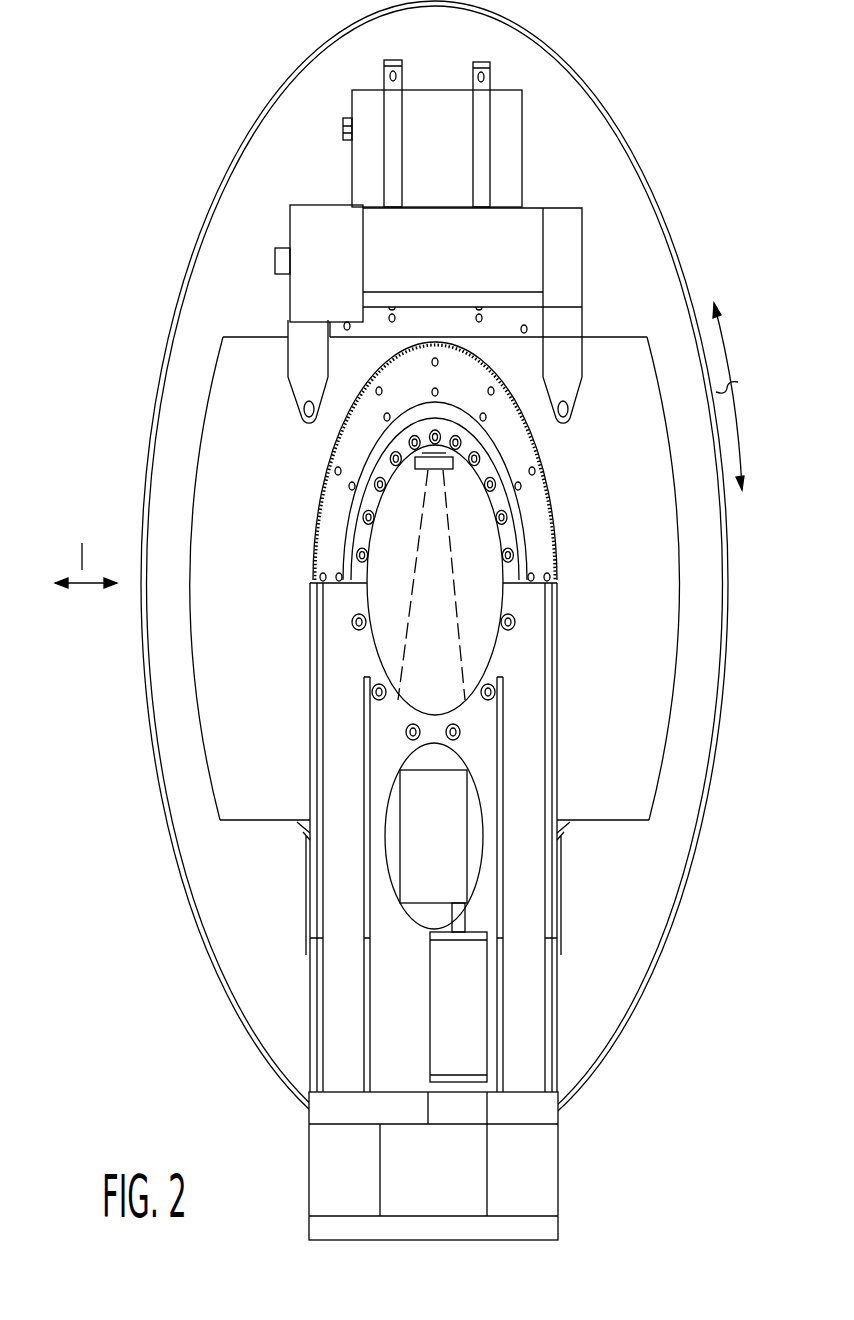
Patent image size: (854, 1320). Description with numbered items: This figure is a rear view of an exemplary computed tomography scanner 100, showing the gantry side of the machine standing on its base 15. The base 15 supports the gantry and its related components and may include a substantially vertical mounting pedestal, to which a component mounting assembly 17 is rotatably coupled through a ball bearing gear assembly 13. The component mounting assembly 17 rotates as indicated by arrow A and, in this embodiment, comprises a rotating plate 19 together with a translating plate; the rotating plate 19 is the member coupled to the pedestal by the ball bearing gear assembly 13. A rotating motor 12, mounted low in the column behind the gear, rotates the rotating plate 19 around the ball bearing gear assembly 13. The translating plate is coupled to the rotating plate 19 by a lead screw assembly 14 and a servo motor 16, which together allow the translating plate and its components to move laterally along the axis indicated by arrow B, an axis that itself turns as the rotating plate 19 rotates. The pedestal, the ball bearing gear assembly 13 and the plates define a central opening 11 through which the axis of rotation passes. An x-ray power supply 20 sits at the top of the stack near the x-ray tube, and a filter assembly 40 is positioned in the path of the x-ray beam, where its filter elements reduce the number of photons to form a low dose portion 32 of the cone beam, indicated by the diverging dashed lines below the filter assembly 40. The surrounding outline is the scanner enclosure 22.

The computed tomography scanner 100 is at (140, 157).
The enclosure 22 is at (277, 92).
The x-ray power supply 20 is at (442, 102).
The servo motor 16 is at (316, 214).
The lead screw assembly 14 is at (535, 208).
The ball bearing gear assembly 13 is at (510, 540).
The central opening 11 is at (388, 630).
The filter assembly 40 is at (421, 470).
The low dose portion 32 is at (455, 590).
The rotating plate 19 is at (212, 718).
The component mounting assembly 17 is at (306, 836).
The rotating motor 12 is at (428, 1010).
The base 15 is at (309, 1162).